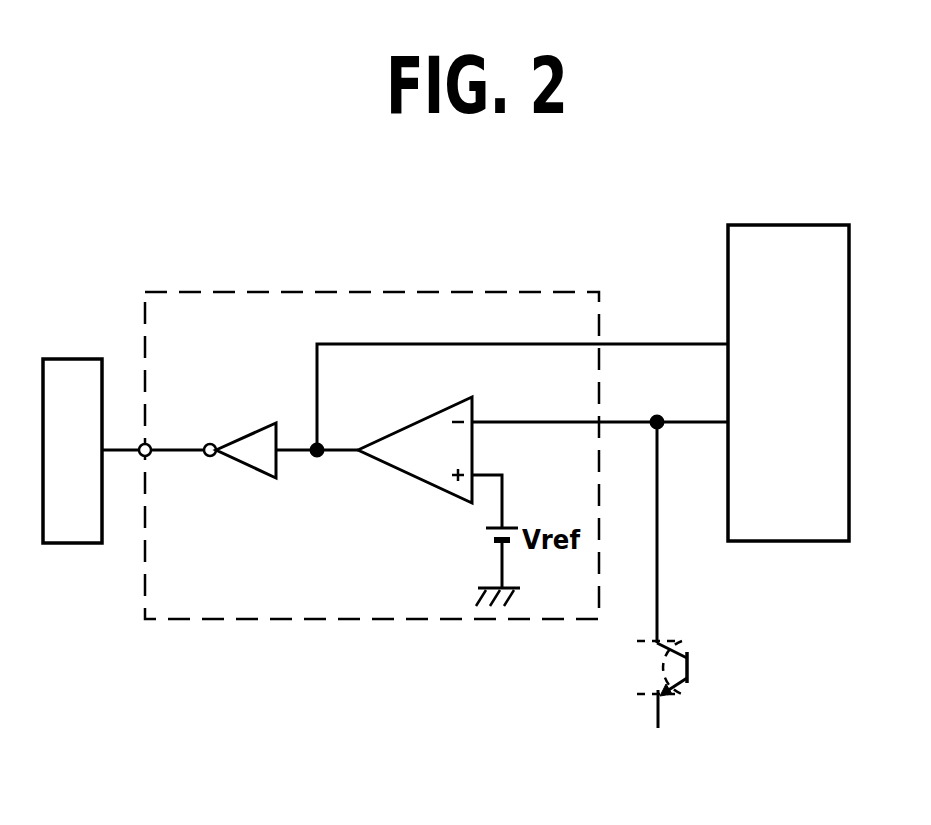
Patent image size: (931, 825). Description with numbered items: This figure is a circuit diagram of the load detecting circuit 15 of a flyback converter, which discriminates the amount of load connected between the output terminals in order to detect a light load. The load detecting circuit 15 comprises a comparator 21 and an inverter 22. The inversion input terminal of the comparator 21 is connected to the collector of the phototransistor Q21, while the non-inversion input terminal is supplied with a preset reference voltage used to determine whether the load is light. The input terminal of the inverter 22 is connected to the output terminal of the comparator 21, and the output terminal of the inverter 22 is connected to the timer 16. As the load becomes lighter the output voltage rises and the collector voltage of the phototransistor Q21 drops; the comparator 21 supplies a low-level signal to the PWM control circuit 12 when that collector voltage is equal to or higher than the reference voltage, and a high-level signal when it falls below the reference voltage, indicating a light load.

The PWM control circuit 12 is at (772, 224).
The load detecting circuit 15 is at (502, 291).
The timer 16 is at (72, 358).
The comparator 21 is at (417, 419).
The inverter 22 is at (247, 433).
The phototransistor Q21 is at (623, 684).